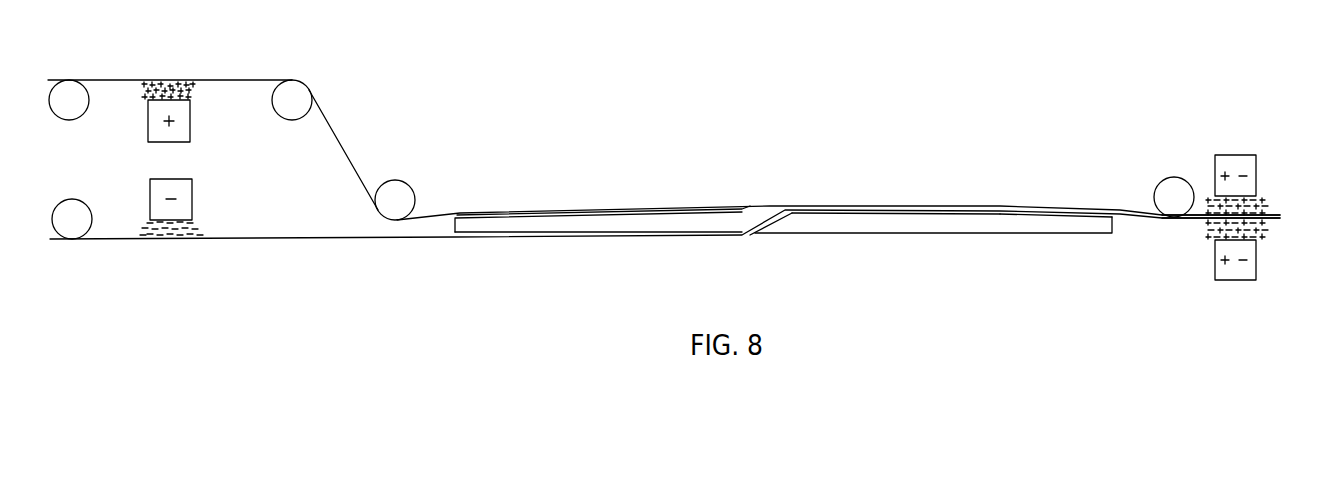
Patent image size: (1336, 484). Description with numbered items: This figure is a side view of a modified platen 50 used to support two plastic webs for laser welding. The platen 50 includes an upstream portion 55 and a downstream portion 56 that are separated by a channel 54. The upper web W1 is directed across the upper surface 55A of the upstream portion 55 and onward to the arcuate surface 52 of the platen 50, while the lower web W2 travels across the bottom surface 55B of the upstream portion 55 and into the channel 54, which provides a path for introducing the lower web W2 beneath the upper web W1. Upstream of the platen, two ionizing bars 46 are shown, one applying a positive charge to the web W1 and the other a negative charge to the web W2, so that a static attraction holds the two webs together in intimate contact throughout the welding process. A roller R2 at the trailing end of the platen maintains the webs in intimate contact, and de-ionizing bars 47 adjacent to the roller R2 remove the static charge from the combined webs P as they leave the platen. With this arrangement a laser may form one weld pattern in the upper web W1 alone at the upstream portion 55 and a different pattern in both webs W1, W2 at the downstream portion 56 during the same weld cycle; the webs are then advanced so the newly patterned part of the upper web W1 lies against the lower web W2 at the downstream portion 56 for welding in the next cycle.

The upper web W1 is at (237, 78).
The lower web W2 is at (248, 239).
The ionizing bar 46 is at (188, 102).
The downstream roller R2 is at (392, 198).
The upper surface of the upstream portion 55A is at (618, 213).
The upstream portion 55 is at (639, 223).
The bottom surface of the upstream portion 55B is at (600, 233).
The channel 54 is at (768, 225).
The downstream portion 56 is at (857, 222).
The arcuate surface 52 is at (917, 213).
The platen 50 is at (1113, 230).
The de-ionizing bar 47 is at (1257, 195).
The combined web product P is at (1268, 215).